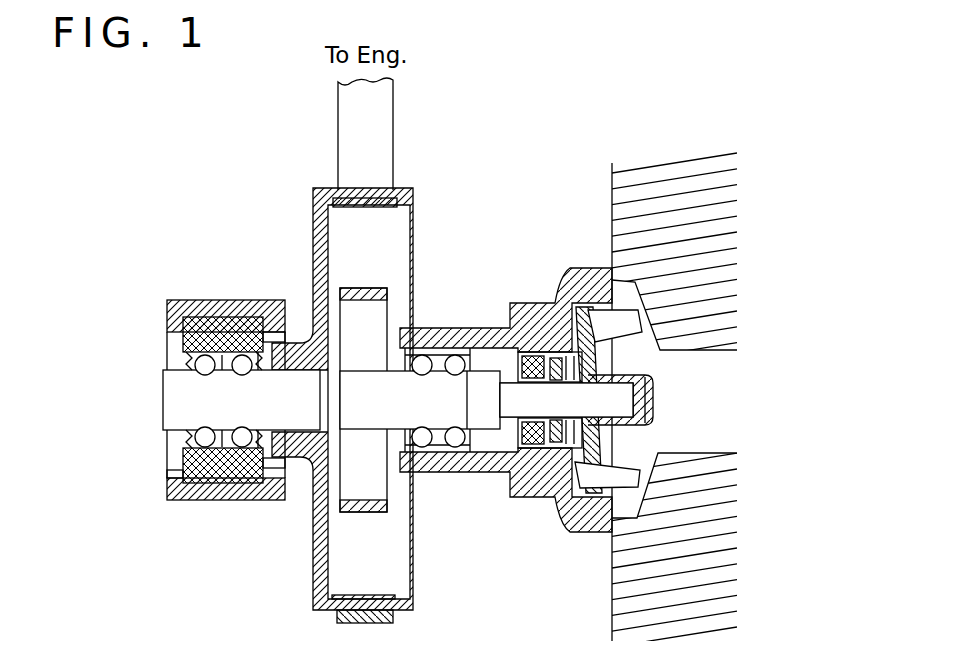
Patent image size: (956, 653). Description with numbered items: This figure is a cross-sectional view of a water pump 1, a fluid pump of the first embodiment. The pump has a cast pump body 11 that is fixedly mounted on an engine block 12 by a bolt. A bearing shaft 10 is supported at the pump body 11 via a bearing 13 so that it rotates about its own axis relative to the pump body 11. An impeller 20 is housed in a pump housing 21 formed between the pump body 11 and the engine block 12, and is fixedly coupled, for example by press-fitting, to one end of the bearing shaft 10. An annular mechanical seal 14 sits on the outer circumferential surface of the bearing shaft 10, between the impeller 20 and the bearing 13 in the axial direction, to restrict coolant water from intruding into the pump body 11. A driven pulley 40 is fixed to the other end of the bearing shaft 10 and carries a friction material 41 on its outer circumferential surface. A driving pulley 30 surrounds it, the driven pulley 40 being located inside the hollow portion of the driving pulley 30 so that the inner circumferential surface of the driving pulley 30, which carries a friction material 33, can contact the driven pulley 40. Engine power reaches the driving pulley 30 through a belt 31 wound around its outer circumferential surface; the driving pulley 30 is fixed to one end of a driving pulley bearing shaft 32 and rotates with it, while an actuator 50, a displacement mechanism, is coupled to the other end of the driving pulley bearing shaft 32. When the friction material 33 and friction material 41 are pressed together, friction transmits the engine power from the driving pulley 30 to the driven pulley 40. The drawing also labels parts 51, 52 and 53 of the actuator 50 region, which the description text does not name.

The water pump 1 is at (286, 164).
The bearing shaft 10 is at (367, 422).
The pump body 11 is at (463, 330).
The engine block 12 is at (627, 196).
The bearing 13 is at (440, 452).
The mechanical seal 14 is at (557, 456).
The impeller 20 is at (612, 318).
The pump housing 21 is at (628, 461).
The driving pulley 30 is at (320, 252).
The belt 31 is at (378, 123).
The driving pulley bearing shaft 32 is at (168, 403).
The friction material 33 is at (388, 193).
The driven pulley 40 is at (380, 322).
The friction material 41 is at (372, 290).
The actuator 50 is at (178, 375).
The lower bearing support 51 is at (167, 473).
The bearing housing 52 is at (167, 302).
The bearing seal 53 is at (195, 363).